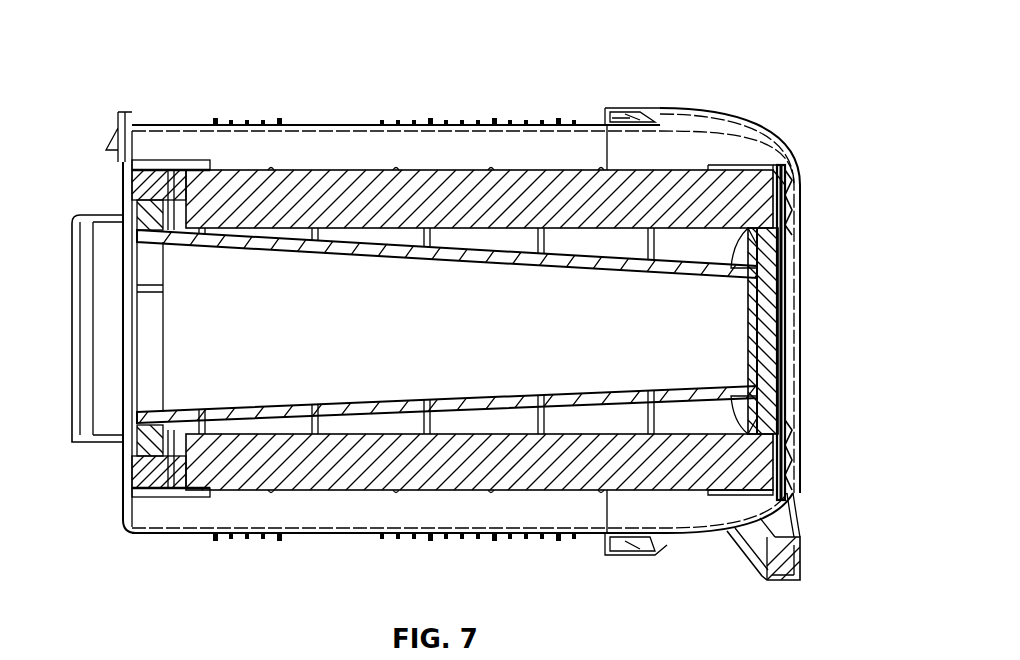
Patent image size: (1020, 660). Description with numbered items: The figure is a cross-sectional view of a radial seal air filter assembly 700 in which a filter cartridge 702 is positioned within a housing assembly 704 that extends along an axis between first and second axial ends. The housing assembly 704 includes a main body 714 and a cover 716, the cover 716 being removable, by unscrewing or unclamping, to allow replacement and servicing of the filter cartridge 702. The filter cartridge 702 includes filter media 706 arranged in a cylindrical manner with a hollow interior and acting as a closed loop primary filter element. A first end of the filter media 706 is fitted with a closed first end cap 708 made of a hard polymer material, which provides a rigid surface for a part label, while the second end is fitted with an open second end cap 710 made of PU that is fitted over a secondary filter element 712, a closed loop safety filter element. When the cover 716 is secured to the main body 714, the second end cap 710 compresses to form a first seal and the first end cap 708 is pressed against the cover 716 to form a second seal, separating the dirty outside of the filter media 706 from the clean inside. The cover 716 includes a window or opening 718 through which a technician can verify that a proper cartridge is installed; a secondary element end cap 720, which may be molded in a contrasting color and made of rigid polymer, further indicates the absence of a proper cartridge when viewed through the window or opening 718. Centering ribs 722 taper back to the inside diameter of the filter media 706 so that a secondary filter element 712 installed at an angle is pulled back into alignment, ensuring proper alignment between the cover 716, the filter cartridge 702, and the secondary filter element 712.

The radial seal air filter assembly 700 is at (144, 52).
The filter cartridge 702 is at (702, 156).
The housing assembly 704 is at (574, 108).
The filter media 706 is at (630, 193).
The first end cap 708 is at (793, 182).
The second end cap 710 is at (146, 188).
The secondary filter element 712 is at (240, 408).
The main body 714 is at (318, 124).
The cover 716 is at (790, 508).
The window or opening 718 is at (797, 330).
The secondary element end cap 720 is at (763, 320).
The centering ribs 722 is at (760, 250).